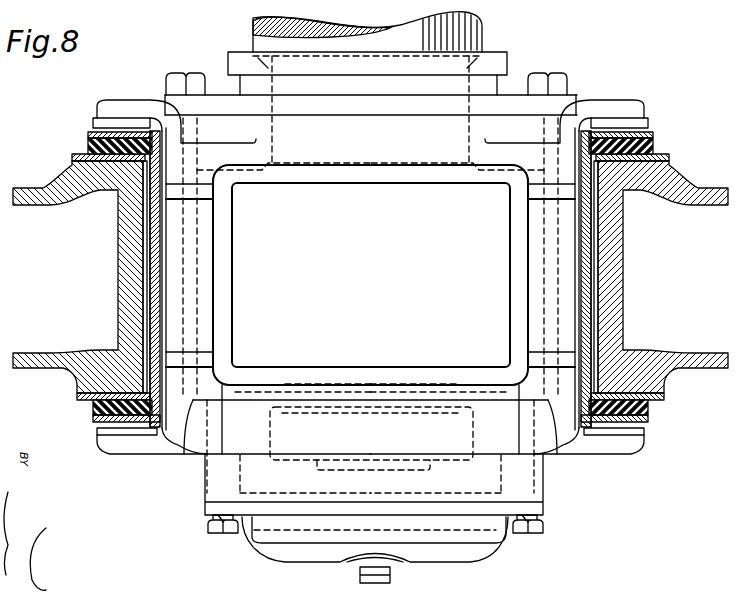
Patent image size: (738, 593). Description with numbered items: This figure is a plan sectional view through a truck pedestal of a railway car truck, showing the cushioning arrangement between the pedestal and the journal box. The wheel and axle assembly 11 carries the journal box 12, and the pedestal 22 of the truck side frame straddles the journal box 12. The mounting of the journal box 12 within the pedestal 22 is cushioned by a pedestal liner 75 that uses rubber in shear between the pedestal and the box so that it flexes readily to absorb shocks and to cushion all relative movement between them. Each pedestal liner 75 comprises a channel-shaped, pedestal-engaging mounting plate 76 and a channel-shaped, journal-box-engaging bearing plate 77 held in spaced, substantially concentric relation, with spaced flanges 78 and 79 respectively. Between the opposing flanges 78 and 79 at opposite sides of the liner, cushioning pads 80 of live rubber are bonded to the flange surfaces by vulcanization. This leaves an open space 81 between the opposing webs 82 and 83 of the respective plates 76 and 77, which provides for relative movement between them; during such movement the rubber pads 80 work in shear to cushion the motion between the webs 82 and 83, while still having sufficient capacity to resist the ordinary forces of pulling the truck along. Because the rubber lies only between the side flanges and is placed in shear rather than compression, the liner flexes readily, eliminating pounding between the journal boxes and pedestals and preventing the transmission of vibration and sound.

The wheel and axle assembly 11 is at (483, 33).
The journal box 12 is at (182, 451).
The pedestal 22 is at (45, 188).
The pedestal liner 75 is at (92, 420).
The mounting plate 76 is at (143, 251).
The bearing plate 77 is at (152, 272).
The flange 78 is at (90, 176).
The flange 79 is at (625, 130).
The cushioning pad 80 is at (88, 144).
The space 81 is at (150, 292).
The web 82 is at (143, 311).
The web 83 is at (155, 330).